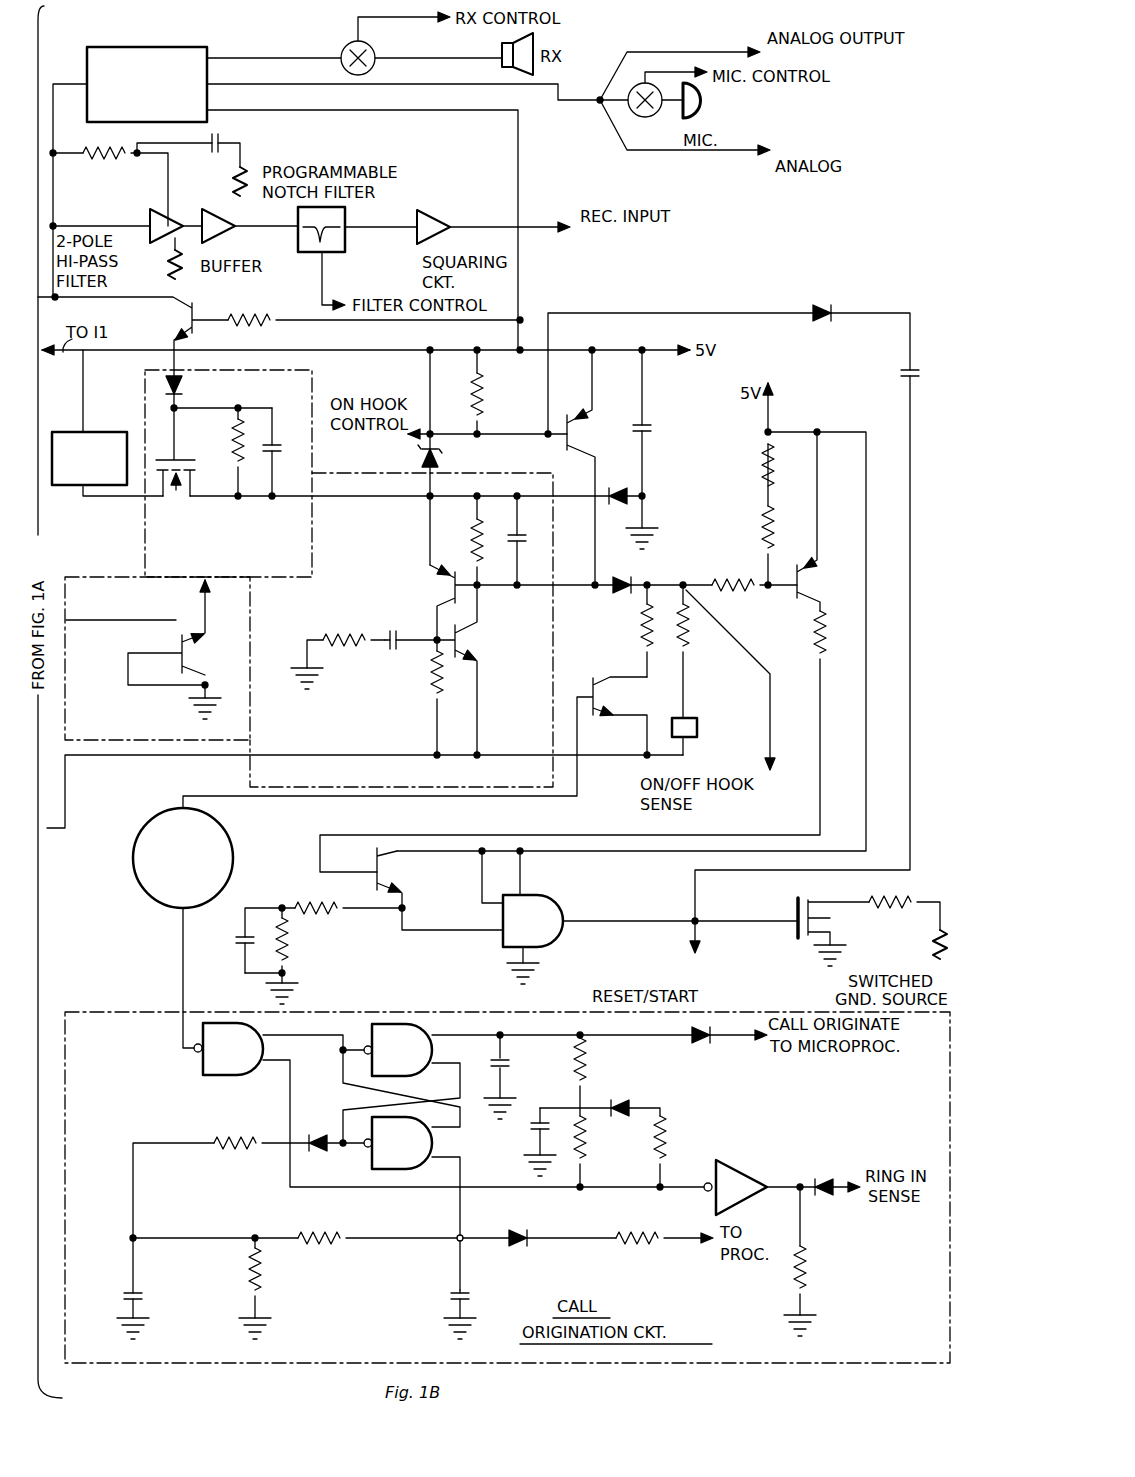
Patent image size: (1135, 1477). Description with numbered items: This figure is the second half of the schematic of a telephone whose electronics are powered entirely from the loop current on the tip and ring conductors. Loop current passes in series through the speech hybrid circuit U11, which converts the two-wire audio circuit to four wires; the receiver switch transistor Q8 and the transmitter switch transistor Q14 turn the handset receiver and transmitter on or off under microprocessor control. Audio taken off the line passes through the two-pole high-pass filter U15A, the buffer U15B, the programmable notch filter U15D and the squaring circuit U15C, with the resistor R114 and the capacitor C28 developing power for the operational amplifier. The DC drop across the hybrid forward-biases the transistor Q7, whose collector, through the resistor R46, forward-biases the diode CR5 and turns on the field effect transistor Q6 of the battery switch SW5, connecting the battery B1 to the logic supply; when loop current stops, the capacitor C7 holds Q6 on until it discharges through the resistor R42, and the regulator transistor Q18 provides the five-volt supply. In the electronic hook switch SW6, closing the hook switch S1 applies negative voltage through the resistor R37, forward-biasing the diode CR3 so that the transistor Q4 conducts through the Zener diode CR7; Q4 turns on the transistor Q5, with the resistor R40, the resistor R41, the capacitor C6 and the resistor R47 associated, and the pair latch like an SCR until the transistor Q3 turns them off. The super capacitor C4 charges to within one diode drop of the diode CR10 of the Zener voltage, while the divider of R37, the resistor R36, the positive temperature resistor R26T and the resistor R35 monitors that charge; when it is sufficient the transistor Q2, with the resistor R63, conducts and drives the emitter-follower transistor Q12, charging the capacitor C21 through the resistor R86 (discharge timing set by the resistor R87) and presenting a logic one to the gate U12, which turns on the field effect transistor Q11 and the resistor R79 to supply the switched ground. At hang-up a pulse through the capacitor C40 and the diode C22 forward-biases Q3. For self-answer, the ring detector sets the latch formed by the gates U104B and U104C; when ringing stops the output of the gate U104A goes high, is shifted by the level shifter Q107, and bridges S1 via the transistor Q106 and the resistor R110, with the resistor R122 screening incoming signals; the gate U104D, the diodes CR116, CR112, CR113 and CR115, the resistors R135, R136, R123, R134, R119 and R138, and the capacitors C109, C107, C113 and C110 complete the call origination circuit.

The speech hybrid circuit U11 is at (326, 198).
The receiver switch transistor Q8 is at (395, 43).
The transmitter switch transistor Q14 is at (666, 108).
The resistor R114 is at (95, 166).
The capacitor C28 is at (197, 159).
The two-pole high-pass filter U15A is at (145, 217).
The buffer U15B is at (240, 226).
The squaring circuit U15C is at (493, 223).
The notch filter U15D is at (357, 258).
The transistor Q7 is at (133, 335).
The resistor R46 is at (375, 310).
The battery switch SW5 is at (283, 541).
The diode CR5 is at (193, 393).
The battery B1 is at (107, 429).
The resistor R42 is at (223, 452).
The capacitor C7 is at (281, 453).
The field effect transistor Q6 is at (175, 469).
The regulator transistor Q18 is at (157, 658).
The Zener diode CR7 is at (451, 457).
The diode C22 is at (828, 329).
The capacitor C40 is at (889, 377).
The transistor Q3 is at (586, 467).
The super capacitor C4 is at (648, 449).
The diode CR10 is at (619, 485).
The electronic hook switch SW6 is at (515, 783).
The resistor R40 is at (492, 542).
The transistor Q4 is at (512, 602).
The diode CR3 is at (647, 597).
The transistor Q5 is at (464, 671).
The resistor R41 is at (419, 699).
The capacitor C6 is at (404, 628).
The resistor R47 is at (338, 661).
The transistor Q106 is at (419, 742).
The resistor R110 is at (626, 631).
The resistor R37 is at (699, 651).
The hook switch S1 is at (709, 725).
The resistor R35 is at (748, 475).
The positive temperature resistor R26T is at (742, 547).
The resistor R36 is at (754, 574).
The transistor Q2 is at (817, 521).
The resistor R63 is at (573, 741).
The level shifter Q107 is at (154, 928).
The transistor Q12 is at (433, 889).
The resistor R86 is at (308, 922).
The resistor R87 is at (284, 956).
The capacitor C21 is at (247, 940).
The gate U12 is at (650, 939).
The field effect transistor Q11 is at (834, 932).
The resistor R79 is at (908, 918).
The latch output gate U104A is at (449, 1106).
The latch U104B is at (516, 1085).
The latch U104C is at (403, 1203).
The inverter D U104D is at (782, 1177).
The diode CR116 is at (725, 1050).
The resistor R135 is at (221, 1187).
The diode CR112 is at (323, 1158).
The resistor R136 is at (321, 1252).
The capacitor C109 is at (152, 1288).
The resistor R123 is at (274, 1288).
The capacitor C107 is at (438, 1313).
The diode CR113 is at (558, 1252).
The resistor R134 is at (664, 1253).
The capacitor C113 is at (518, 1077).
The resistor R122 is at (605, 1111).
The diode CR115 is at (600, 1098).
The resistor R119 is at (639, 1151).
The capacitor C110 is at (528, 1141).
The resistor R138 is at (820, 1261).